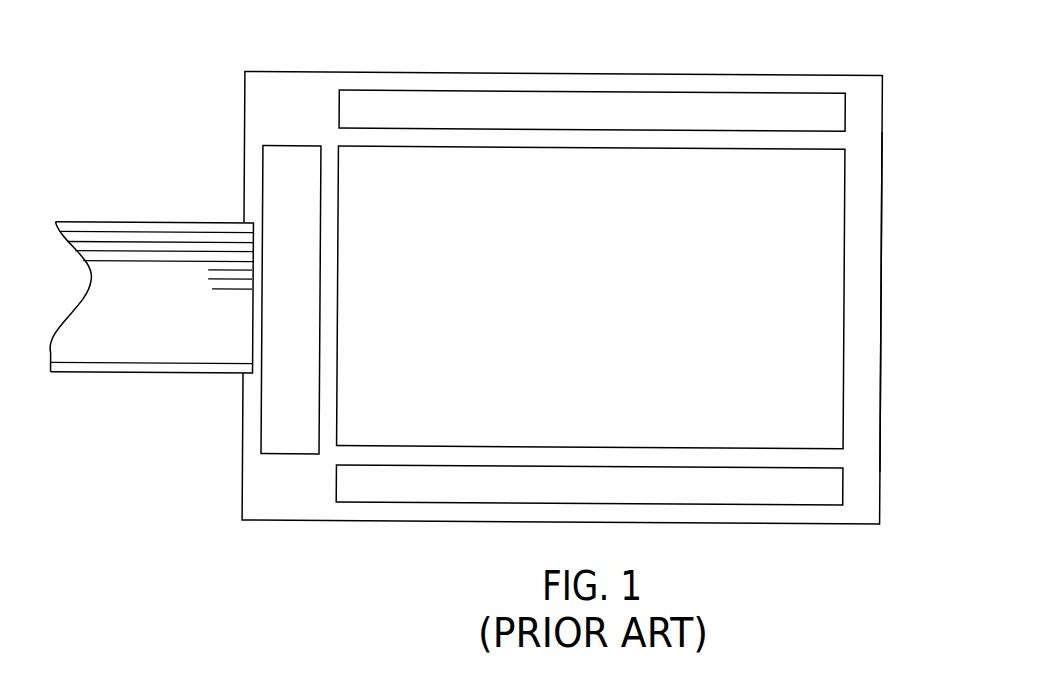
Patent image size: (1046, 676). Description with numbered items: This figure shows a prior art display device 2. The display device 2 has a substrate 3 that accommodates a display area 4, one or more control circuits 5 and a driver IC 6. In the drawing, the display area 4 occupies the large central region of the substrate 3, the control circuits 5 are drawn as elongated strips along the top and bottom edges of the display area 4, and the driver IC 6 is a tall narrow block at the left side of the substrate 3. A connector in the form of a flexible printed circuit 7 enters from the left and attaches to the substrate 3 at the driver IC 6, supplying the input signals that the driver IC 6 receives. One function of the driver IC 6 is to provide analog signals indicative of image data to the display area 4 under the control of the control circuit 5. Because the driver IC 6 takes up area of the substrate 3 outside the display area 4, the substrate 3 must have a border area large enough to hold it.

The display device 2 is at (827, 58).
The substrate 3 is at (874, 252).
The display area 4 is at (595, 287).
The control circuit 5 is at (586, 94).
The driver IC 6 is at (268, 395).
The flexible printed circuit 7 is at (152, 221).